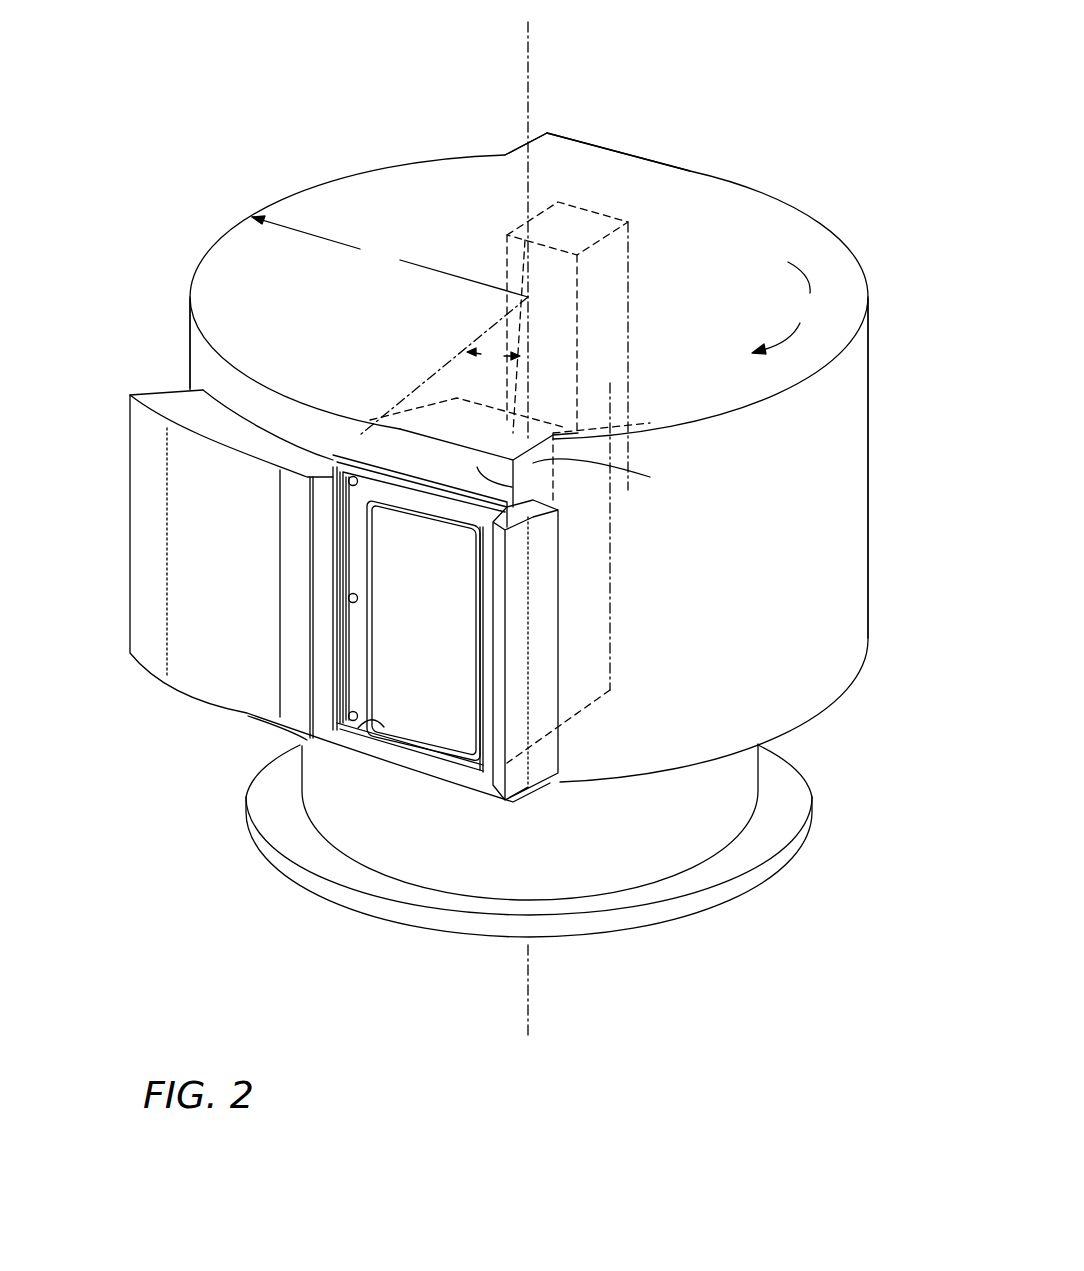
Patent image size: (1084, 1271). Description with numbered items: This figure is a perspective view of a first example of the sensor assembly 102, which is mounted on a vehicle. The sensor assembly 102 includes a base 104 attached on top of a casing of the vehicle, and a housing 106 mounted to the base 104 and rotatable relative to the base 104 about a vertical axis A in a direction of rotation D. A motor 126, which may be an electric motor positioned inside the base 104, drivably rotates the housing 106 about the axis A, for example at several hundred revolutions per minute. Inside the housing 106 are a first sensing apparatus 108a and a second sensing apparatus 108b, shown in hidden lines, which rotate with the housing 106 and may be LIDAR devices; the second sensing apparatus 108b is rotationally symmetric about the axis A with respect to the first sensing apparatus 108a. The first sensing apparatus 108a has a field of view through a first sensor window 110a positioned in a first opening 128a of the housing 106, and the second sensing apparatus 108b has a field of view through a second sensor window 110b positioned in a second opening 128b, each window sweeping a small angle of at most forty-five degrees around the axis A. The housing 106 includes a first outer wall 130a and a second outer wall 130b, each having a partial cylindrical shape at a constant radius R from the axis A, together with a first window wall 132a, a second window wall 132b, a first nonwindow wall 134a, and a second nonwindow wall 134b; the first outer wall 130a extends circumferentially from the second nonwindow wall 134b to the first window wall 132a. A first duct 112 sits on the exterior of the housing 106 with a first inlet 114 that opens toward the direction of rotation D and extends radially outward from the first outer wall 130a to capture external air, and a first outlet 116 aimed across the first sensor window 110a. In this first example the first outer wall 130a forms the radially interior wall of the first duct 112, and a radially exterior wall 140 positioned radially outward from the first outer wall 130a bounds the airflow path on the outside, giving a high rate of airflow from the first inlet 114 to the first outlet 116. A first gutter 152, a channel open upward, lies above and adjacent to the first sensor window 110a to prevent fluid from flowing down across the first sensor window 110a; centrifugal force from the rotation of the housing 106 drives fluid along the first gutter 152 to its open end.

The sensor assembly 102 is at (290, 54).
The base 104 is at (780, 860).
The housing 106 is at (876, 388).
The first sensing apparatus 108a is at (613, 628).
The second sensing apparatus 108b is at (633, 255).
The first sensor window 110a is at (440, 628).
The second sensor window 110b is at (600, 207).
The first duct 112 is at (207, 670).
The first inlet 114 is at (128, 463).
The first outlet 116 is at (350, 553).
The motor 126 is at (612, 838).
The first opening 128a is at (365, 720).
The second opening 128b is at (637, 303).
The first outer wall 130a is at (195, 358).
The second outer wall 130b is at (830, 478).
The first window wall 132a is at (560, 507).
The second window wall 132b is at (575, 140).
The first nonwindow wall 134a is at (562, 462).
The second nonwindow wall 134b is at (517, 157).
The radially exterior wall 140 is at (185, 633).
The first gutter 152 is at (333, 457).